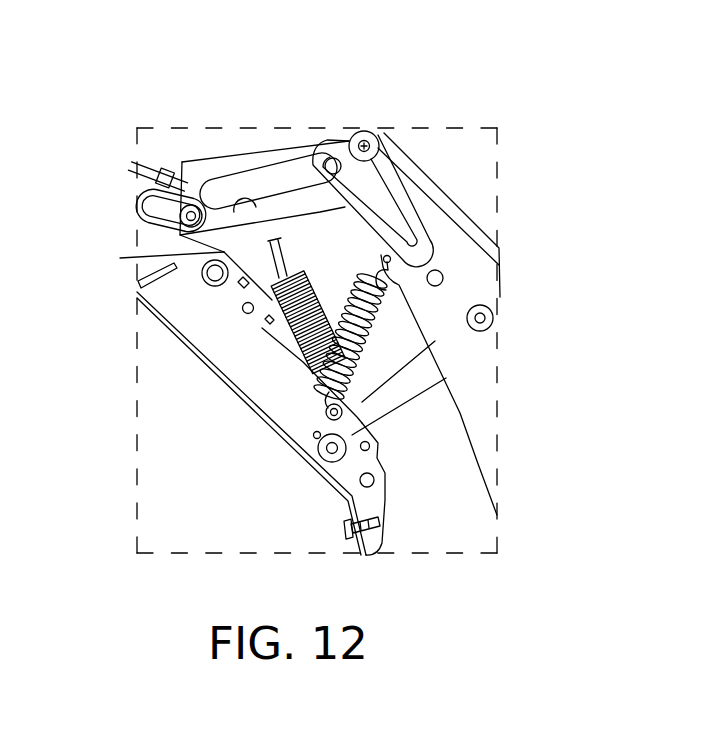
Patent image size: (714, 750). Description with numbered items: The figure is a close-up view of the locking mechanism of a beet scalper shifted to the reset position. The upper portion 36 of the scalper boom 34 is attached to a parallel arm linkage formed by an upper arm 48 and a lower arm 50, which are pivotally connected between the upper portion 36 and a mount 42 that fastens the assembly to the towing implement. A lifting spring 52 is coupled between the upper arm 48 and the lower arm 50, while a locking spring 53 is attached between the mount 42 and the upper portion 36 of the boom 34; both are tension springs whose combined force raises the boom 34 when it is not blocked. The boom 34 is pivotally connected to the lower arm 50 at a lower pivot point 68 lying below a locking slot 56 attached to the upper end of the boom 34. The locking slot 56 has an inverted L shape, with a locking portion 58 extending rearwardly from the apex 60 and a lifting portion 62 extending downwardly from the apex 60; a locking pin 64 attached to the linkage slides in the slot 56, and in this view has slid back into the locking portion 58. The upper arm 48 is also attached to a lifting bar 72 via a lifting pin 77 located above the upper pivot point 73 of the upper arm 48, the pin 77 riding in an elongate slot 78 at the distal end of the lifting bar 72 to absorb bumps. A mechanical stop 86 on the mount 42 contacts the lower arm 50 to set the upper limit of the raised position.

The scalper boom 34 is at (483, 413).
The upper portion of the scalper boom 36 is at (505, 224).
The mount 42 is at (210, 323).
The upper arm 48 is at (254, 162).
The lower arm 50 is at (398, 398).
The lifting spring 52 is at (258, 372).
The locking spring 53 is at (325, 405).
The locking slot 56 is at (387, 188).
The locking portion 58 is at (359, 133).
The apex 60 is at (325, 150).
The lifting portion 62 is at (403, 237).
The locking pin 64 is at (366, 141).
The lower pivot point 68 is at (480, 318).
The lifting bar 72 is at (133, 168).
The upper pivot point 73 is at (215, 273).
The lifting pin 77 is at (192, 212).
The elongate slot 78 is at (153, 208).
The mechanical stop 86 is at (322, 410).